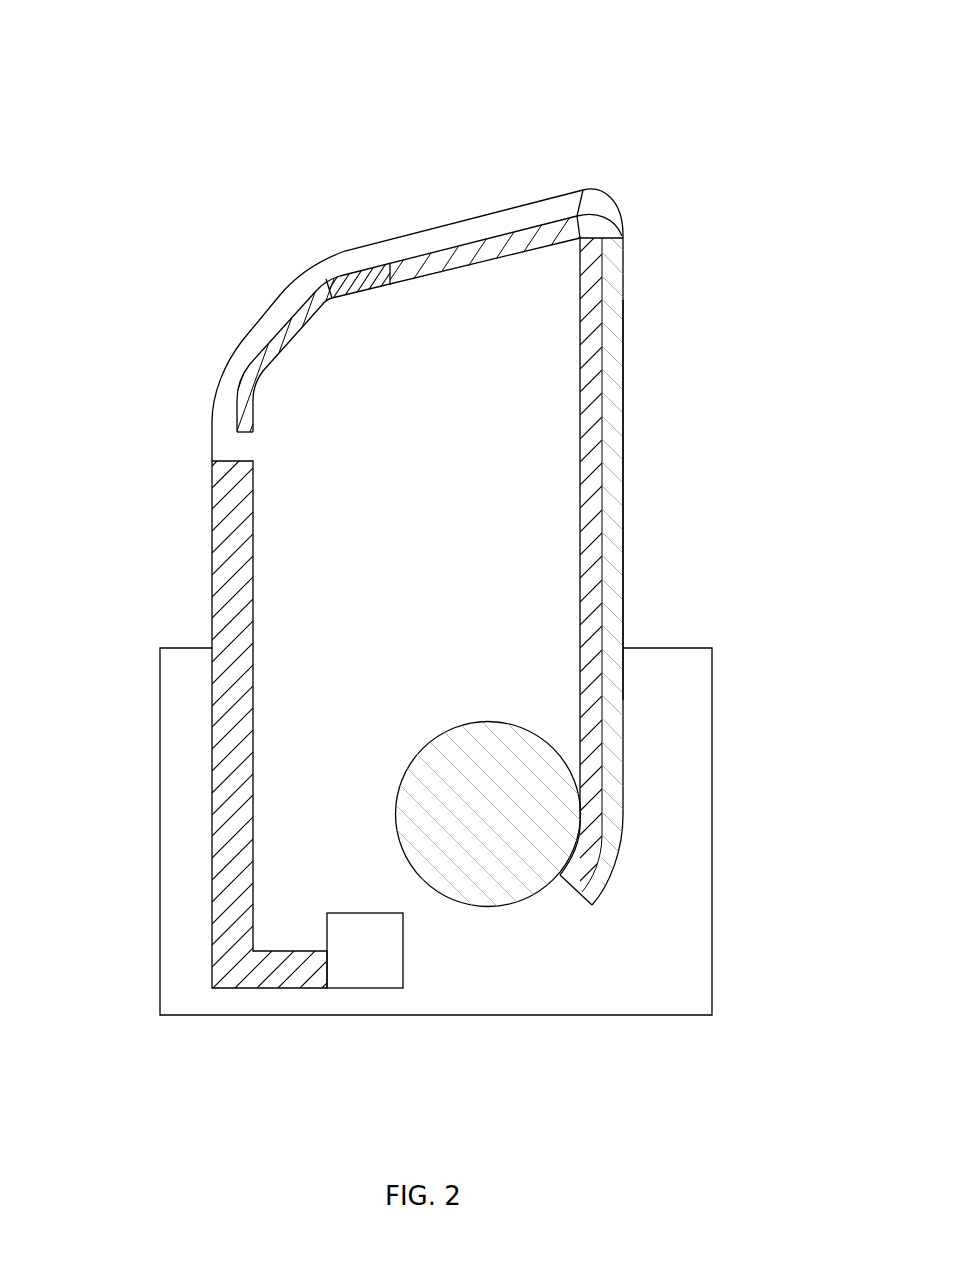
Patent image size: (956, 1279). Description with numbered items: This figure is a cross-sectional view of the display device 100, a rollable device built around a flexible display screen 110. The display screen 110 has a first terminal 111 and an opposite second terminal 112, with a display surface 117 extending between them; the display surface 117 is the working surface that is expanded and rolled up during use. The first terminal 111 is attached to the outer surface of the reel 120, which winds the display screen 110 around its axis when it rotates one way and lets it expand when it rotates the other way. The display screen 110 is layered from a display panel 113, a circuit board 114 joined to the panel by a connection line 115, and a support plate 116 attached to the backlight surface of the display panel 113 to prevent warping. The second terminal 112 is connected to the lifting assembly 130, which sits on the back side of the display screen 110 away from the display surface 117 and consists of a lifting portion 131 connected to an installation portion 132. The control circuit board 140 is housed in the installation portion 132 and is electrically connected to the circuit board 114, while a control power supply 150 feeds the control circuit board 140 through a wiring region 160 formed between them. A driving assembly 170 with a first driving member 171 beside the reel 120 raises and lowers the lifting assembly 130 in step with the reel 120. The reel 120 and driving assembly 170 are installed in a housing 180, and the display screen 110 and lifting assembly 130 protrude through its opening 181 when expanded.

The display device 100 is at (449, 110).
The display screen 110 is at (722, 172).
The first terminal 111 is at (560, 875).
The second terminal 112 is at (580, 245).
The display panel 113 is at (612, 323).
The circuit board 114 is at (583, 228).
The connection line 115 is at (605, 234).
The support plate 116 is at (588, 268).
The display surface 117 is at (625, 454).
The reel 120 is at (500, 850).
The lifting assembly 130 is at (124, 427).
The lifting portion 131 is at (227, 522).
The installation portion 132 is at (227, 447).
The control circuit board 140 is at (467, 255).
The control power supply 150 is at (263, 357).
The wiring region 160 is at (353, 287).
The driving assembly 170 is at (367, 1016).
The first driving member 171 is at (367, 938).
The housing 180 is at (712, 767).
The opening 181 is at (408, 648).